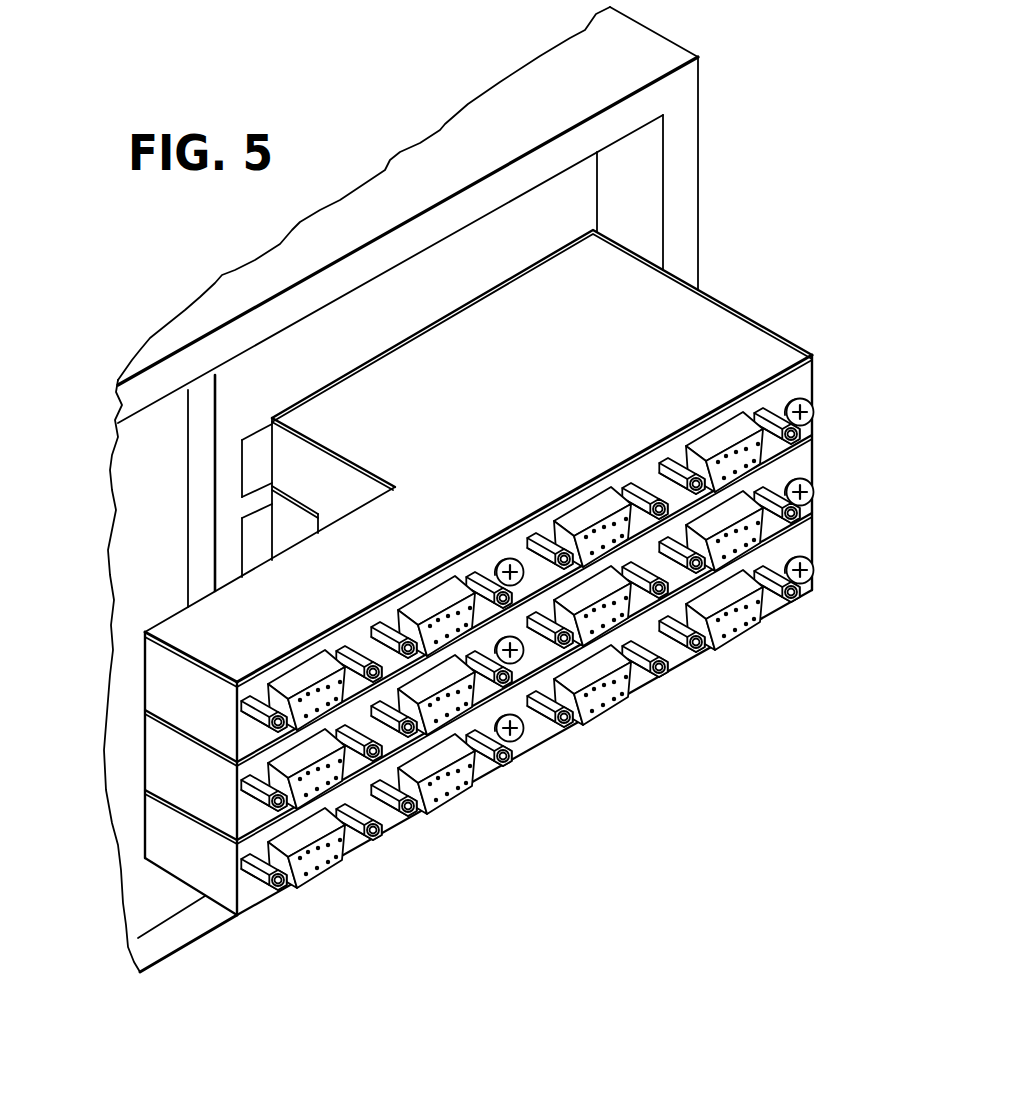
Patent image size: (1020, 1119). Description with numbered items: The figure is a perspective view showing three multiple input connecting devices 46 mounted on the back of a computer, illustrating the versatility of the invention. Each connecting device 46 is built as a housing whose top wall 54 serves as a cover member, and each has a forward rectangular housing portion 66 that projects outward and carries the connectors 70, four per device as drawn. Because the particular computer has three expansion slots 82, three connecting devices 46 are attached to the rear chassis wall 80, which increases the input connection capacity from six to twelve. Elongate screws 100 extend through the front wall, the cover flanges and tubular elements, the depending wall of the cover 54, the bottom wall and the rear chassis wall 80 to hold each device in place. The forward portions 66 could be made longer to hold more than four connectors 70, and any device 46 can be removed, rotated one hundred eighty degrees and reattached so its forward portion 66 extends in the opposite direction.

The connecting device 46 is at (112, 661).
The top wall 54 is at (712, 317).
The forward rectangular housing portion 66 is at (163, 688).
The connectors 70 is at (320, 873).
The rear chassis wall 80 is at (471, 258).
The expansion slots 82 is at (253, 468).
The screws 100 is at (813, 528).